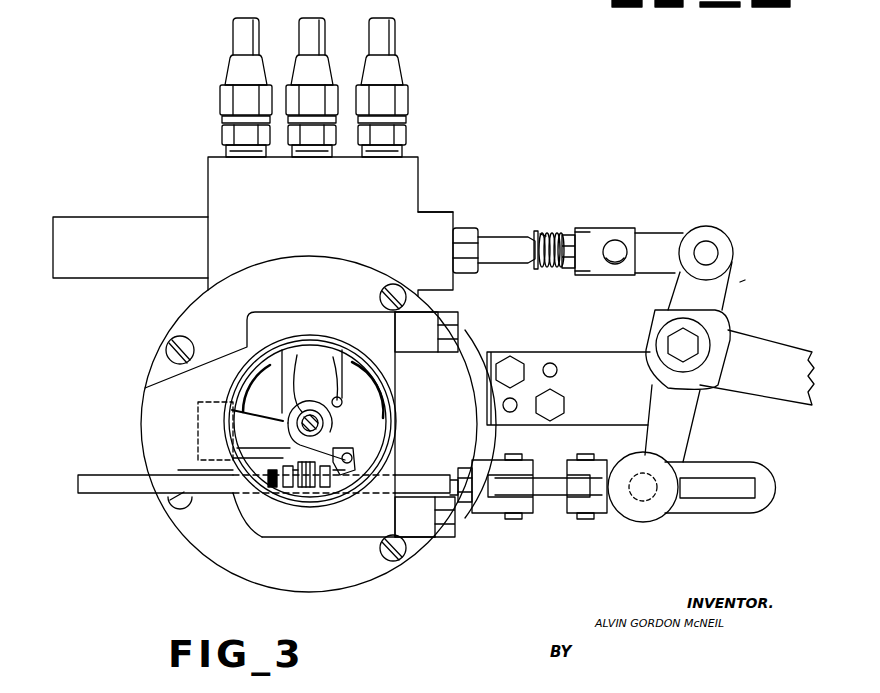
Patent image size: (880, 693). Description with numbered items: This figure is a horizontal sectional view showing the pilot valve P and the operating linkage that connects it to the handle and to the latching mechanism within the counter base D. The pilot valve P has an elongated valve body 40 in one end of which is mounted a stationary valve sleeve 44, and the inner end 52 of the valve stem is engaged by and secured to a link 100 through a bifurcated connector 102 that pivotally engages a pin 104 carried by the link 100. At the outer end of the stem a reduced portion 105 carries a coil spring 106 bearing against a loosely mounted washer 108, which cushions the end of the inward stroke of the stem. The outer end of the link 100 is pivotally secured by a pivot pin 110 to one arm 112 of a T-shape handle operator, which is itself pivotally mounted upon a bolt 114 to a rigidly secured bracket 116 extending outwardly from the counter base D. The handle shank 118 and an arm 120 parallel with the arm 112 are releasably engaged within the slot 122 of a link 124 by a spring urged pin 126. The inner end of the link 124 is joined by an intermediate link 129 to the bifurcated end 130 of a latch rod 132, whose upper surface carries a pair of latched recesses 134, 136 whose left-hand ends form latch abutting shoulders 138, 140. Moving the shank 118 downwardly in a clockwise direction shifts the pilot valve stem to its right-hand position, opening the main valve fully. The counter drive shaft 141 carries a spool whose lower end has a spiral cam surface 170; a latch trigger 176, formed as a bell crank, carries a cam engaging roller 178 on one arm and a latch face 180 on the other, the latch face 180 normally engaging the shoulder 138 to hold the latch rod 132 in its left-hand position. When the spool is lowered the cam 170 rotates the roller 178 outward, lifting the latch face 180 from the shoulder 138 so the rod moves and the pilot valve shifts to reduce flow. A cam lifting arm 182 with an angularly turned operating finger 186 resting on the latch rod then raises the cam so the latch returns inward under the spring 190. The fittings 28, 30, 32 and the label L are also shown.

The fuel outlet fitting 28 is at (318, 48).
The fuel outlet fitting 30 is at (388, 48).
The fuel outlet fitting 32 is at (250, 48).
The valve body 40 is at (208, 190).
The stationary valve sleeve 44 is at (470, 234).
The inner end of the valve stem 52 is at (504, 242).
The link 100 is at (670, 232).
The bifurcated connector 102 is at (582, 227).
The pin 104 is at (618, 244).
The reduced portion 105 is at (546, 234).
The coil spring 106 is at (548, 268).
The washer 108 is at (538, 270).
The pivot pin 110 is at (720, 250).
The arm 112 is at (718, 300).
The bolt 114 is at (700, 340).
The bracket 116 is at (582, 356).
The handle shank 118 is at (780, 352).
The arm 120 is at (690, 430).
The slot 122 is at (722, 480).
The link 124 is at (770, 484).
The spring urged pin 126 is at (650, 520).
The intermediate link 129 is at (552, 500).
The bifurcated end 130 is at (506, 515).
The latch rod 132 is at (135, 493).
The latch recess 134 is at (338, 480).
The latch recess 136 is at (285, 490).
The latch abutting shoulder 138 is at (324, 490).
The latch abutting shoulder 140 is at (270, 488).
The drive shaft 141 is at (287, 372).
The spiral cam surface 170 is at (310, 408).
The latch trigger 176 is at (342, 406).
The cam engaging roller 178 is at (332, 372).
The latch face 180 is at (312, 490).
The cam lifting arm 182 is at (258, 420).
The operating finger 186 is at (296, 490).
The spring 190 is at (270, 487).
The pilot valve P is at (439, 204).
The lever assembly L is at (751, 279).
The counter base D is at (141, 371).